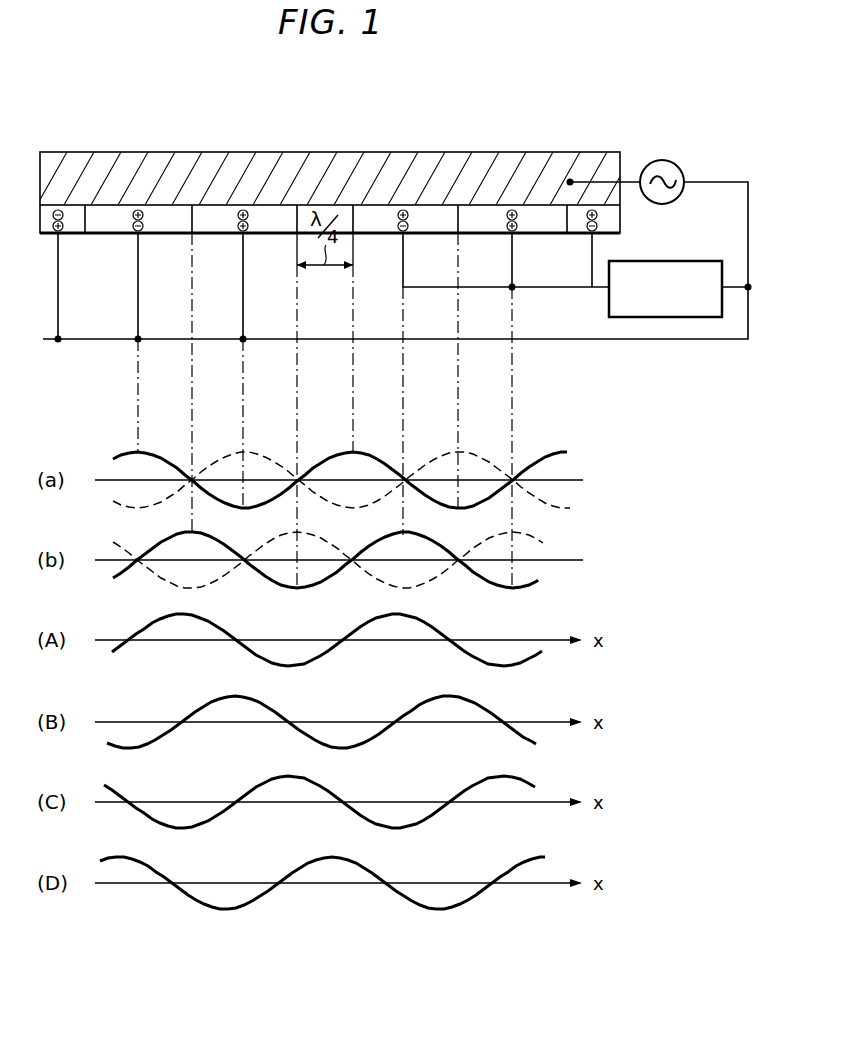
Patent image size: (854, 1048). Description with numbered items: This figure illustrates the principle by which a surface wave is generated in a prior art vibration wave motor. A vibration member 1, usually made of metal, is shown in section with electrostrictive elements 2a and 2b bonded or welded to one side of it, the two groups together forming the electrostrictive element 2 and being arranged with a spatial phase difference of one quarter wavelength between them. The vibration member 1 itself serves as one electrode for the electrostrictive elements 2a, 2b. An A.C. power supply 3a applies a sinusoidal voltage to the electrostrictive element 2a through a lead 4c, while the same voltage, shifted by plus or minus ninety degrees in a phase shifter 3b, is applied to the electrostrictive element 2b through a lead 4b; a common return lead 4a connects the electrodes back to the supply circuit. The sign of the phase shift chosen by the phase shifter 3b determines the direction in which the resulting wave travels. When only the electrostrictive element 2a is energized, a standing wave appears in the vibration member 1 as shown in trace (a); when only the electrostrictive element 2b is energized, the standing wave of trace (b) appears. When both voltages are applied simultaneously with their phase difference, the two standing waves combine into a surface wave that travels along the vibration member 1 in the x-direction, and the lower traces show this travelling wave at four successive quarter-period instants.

The vibration member 1 is at (410, 158).
The electrostrictive element 2 is at (270, 112).
The electrostrictive element 2a is at (78, 212).
The electrostrictive element 2b is at (372, 215).
The A.C. power supply 3a is at (685, 161).
The phase shifter 3b is at (667, 260).
The common lead wire 4a is at (660, 340).
The lead wire to second electrode group 4b is at (540, 288).
The lead wire to first electrode group 4c is at (629, 180).